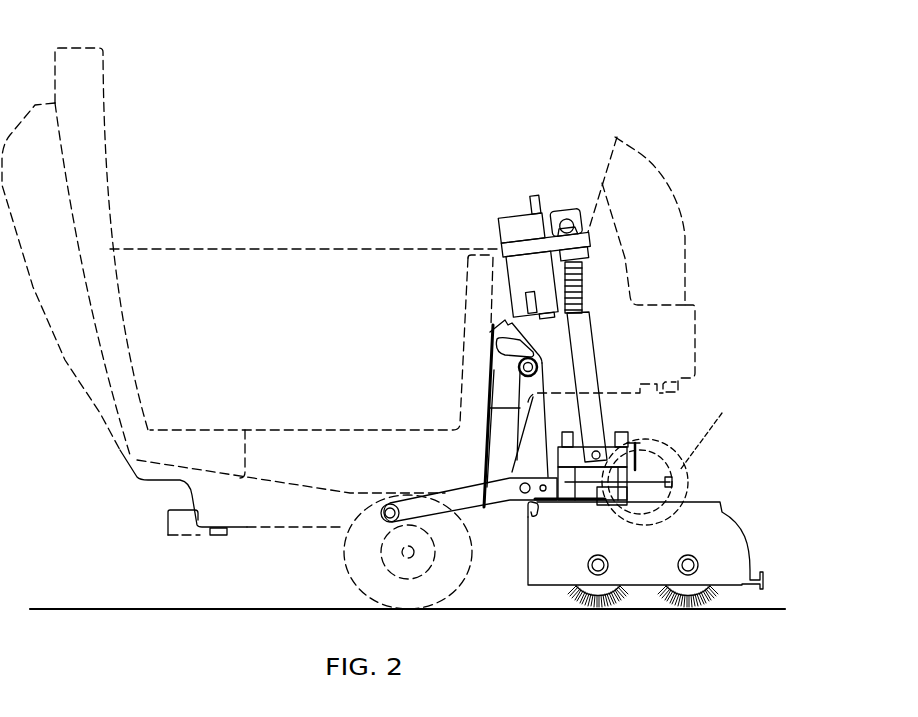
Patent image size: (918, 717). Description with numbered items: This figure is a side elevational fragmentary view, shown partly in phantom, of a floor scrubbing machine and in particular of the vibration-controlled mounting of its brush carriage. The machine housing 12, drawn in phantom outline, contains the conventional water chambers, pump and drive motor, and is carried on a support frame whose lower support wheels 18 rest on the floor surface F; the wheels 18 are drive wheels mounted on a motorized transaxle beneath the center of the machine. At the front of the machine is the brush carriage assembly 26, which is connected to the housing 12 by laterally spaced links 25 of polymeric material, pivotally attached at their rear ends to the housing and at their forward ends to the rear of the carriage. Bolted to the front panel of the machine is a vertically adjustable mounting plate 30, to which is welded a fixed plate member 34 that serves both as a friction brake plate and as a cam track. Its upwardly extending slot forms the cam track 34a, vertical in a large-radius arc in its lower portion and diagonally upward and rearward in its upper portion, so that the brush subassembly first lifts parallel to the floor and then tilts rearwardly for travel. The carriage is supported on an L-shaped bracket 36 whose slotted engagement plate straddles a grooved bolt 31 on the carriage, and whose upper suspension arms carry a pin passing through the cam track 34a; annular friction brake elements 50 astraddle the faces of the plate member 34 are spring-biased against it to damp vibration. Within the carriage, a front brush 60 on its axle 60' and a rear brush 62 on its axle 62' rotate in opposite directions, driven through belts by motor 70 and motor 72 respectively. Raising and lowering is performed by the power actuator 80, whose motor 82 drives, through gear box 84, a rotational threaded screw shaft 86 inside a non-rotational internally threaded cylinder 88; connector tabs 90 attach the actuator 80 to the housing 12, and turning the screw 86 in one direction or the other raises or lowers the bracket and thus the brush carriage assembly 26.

The housing 12 is at (644, 153).
The lower support wheels 18 is at (346, 568).
The links 25 is at (470, 503).
The brush carriage assembly 26 is at (706, 502).
The mounting plate 30 is at (489, 400).
The grooved bolt 31 is at (715, 430).
The fixed plate member 34 is at (498, 383).
The cam track 34a is at (491, 330).
The L-shaped bracket 36 is at (530, 449).
The friction brake elements 50 is at (518, 367).
The front brush 60 is at (675, 613).
The axle of front brush 60' is at (736, 539).
The rear brush 62 is at (585, 613).
The axle of rear brush 62' is at (571, 552).
The motor 70 is at (688, 474).
The motor 72 is at (652, 452).
The power actuator 80 is at (510, 215).
The motor 82 is at (517, 273).
The gear box 84 is at (502, 252).
The threaded screw shaft 86 is at (583, 285).
The internally threaded cylinder 88 is at (592, 348).
The connector tabs 90 is at (578, 226).
The floor surface F is at (88, 606).